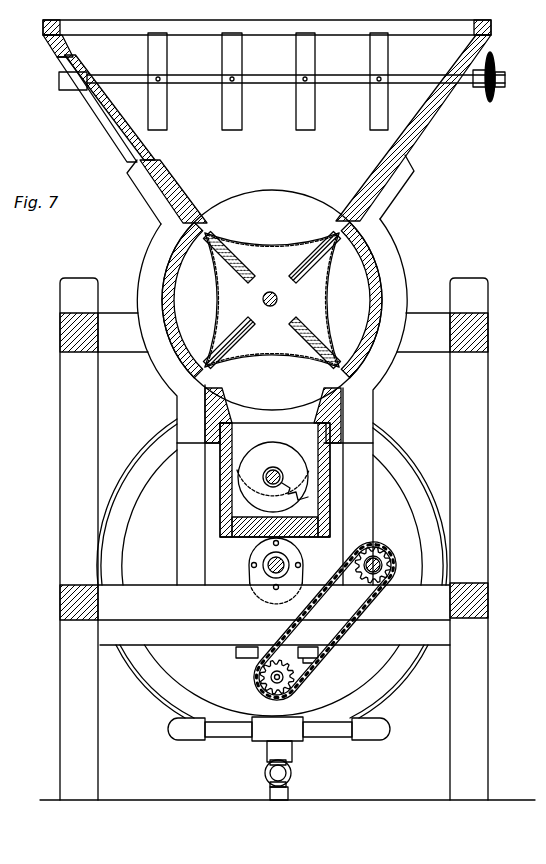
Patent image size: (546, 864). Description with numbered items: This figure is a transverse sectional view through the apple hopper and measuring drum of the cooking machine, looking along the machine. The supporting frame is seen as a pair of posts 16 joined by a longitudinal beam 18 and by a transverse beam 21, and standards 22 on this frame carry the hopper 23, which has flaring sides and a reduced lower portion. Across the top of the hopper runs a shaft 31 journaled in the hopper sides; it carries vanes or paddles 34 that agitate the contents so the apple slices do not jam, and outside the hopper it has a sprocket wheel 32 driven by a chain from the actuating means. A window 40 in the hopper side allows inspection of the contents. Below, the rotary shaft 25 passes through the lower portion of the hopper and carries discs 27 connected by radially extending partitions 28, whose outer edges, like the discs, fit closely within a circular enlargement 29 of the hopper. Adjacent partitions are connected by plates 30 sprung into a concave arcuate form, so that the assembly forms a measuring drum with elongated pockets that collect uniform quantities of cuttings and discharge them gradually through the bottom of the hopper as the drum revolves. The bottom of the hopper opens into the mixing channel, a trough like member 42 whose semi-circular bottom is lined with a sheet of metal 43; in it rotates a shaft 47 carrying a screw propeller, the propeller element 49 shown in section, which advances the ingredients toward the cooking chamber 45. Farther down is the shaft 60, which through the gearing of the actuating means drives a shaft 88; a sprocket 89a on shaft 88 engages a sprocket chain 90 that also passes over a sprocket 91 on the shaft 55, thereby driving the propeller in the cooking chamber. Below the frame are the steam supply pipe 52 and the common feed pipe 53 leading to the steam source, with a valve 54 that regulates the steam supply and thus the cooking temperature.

The post 16 is at (455, 373).
The longitudinal beam 18 is at (486, 333).
The transverse beam 21 is at (447, 318).
The standard 22 is at (183, 512).
The hopper 23 is at (435, 120).
The rotary shaft 25 is at (278, 298).
The disc 27 is at (250, 212).
The partition 28 is at (297, 265).
The circular enlargement 29 is at (373, 260).
The plate 30 is at (303, 233).
The shaft 31 is at (420, 74).
The sprocket wheel 32 is at (496, 63).
The paddle 34 is at (373, 107).
The window 40 is at (118, 114).
The trough like member 42 is at (330, 505).
The sheet of metal 43 is at (273, 415).
The cooking chamber 45 is at (173, 652).
The shaft 47 is at (280, 468).
The roller 49 is at (247, 442).
The supply pipe 52 is at (170, 727).
The feed pipe 53 is at (292, 748).
The valve 54 is at (292, 772).
The shaft 55 is at (248, 672).
The shaft 60 is at (300, 560).
The shaft 88 is at (380, 558).
The sprocket 89a is at (380, 578).
The sprocket chain 90 is at (343, 634).
The sprocket 91 is at (297, 683).